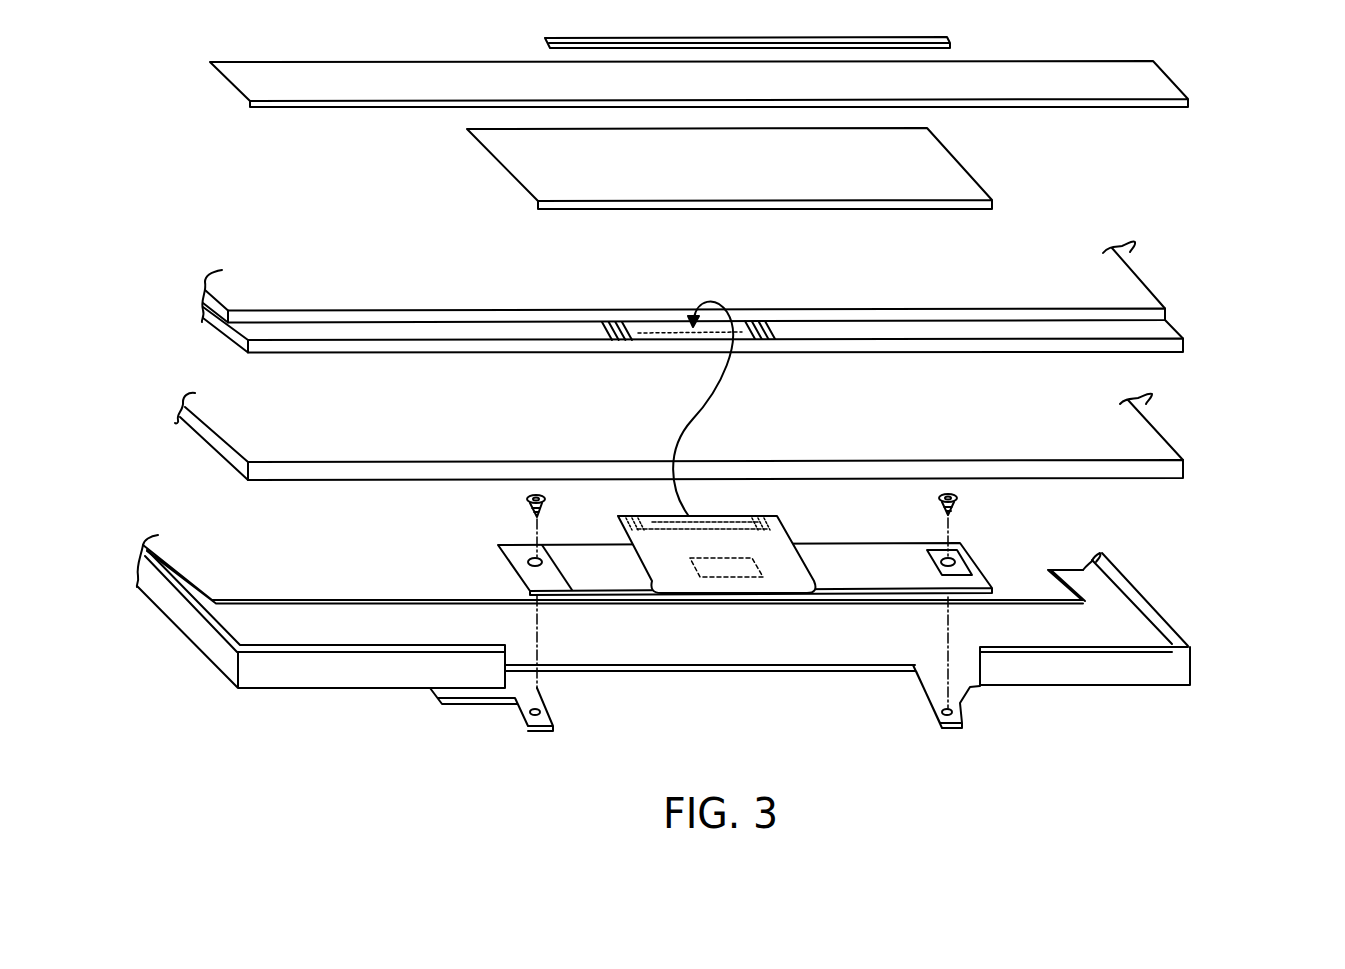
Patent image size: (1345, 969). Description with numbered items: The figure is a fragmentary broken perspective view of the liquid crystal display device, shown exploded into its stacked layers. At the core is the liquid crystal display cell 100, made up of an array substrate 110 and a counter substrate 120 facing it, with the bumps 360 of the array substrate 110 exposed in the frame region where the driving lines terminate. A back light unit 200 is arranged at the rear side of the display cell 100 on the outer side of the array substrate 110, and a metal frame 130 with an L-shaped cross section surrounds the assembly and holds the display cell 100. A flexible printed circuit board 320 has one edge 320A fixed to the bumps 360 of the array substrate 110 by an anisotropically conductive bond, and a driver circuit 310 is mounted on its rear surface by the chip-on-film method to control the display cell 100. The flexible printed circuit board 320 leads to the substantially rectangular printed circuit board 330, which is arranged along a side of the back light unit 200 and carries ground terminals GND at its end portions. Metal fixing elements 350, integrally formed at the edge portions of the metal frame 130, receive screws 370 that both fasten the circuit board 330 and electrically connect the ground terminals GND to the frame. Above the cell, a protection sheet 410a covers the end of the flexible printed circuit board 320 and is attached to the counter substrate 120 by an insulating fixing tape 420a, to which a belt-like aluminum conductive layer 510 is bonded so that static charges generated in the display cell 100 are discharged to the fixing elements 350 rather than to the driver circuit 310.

The conductive layer 510 is at (952, 39).
The insulating fixing tape 420a is at (1158, 78).
The protection sheet 410a is at (963, 167).
The liquid crystal display cell 100 is at (764, 327).
The counter substrate 120 is at (1145, 277).
The array substrate 110 is at (733, 358).
The bumps 360 is at (617, 343).
The back light unit 200 is at (1162, 432).
The screws 370 is at (527, 502).
The flexible printed circuit board 320 is at (742, 614).
The one edge of the flexible printed circuit board 320A is at (723, 515).
The printed circuit board 330 is at (983, 572).
The ground terminal GND is at (742, 549).
The driver circuit 310 is at (737, 578).
The metal frame 130 is at (692, 636).
The metal fixing elements 350 is at (555, 725).